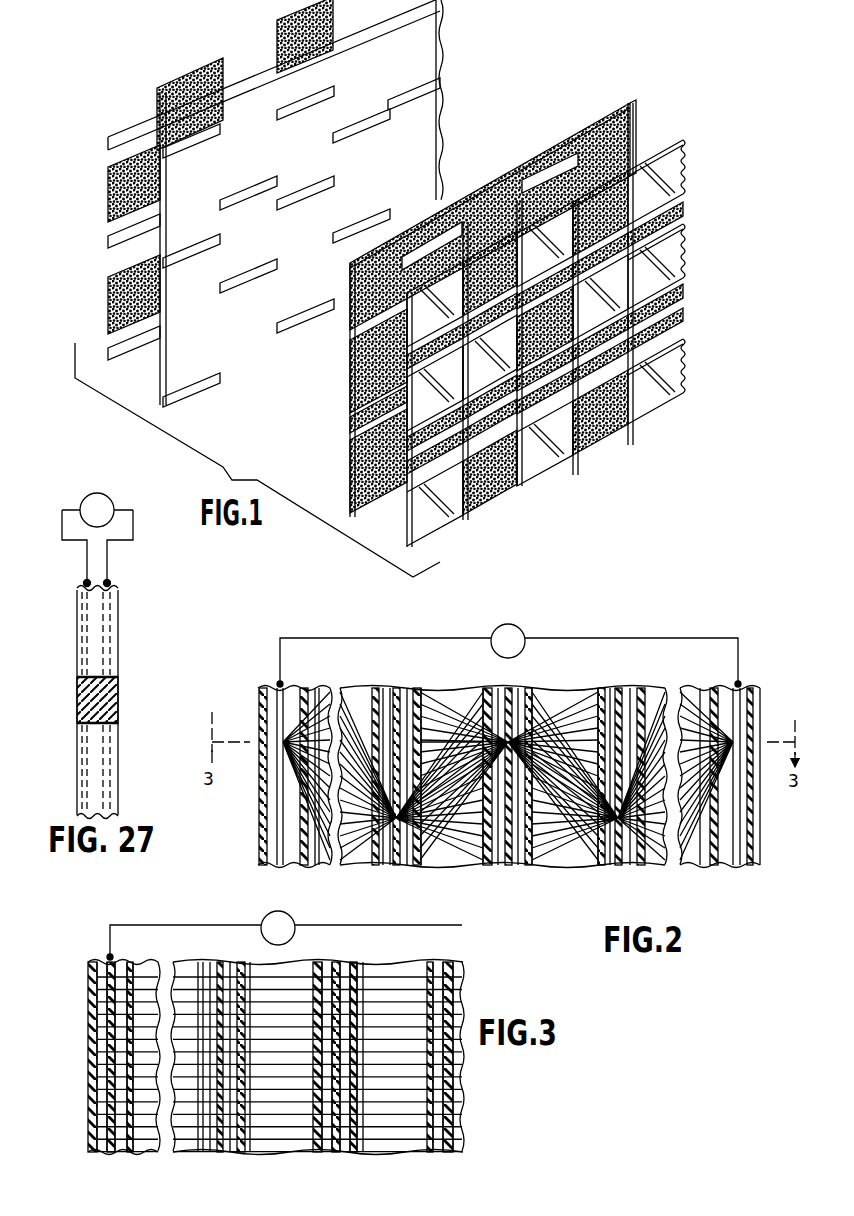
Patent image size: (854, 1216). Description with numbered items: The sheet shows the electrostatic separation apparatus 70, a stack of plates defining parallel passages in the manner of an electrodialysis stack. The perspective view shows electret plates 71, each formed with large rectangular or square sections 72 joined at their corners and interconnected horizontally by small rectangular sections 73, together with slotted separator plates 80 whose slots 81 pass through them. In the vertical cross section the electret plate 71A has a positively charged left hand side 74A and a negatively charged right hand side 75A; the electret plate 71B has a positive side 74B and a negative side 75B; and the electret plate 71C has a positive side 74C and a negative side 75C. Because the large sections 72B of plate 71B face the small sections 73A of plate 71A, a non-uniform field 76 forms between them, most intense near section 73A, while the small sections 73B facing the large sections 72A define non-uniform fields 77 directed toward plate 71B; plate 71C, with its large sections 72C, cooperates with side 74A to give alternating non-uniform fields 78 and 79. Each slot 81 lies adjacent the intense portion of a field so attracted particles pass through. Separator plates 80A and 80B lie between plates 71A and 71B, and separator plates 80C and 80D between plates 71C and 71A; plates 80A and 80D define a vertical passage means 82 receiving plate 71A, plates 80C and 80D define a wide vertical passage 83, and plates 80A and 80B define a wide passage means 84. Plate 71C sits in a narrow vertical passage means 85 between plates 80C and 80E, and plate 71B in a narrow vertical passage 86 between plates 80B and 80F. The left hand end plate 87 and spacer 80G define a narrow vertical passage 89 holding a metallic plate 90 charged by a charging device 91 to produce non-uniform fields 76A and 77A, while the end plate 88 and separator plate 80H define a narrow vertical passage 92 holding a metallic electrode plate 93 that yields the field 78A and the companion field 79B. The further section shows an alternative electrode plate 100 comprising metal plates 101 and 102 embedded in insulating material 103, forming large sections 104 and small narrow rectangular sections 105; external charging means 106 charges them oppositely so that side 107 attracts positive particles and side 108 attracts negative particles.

In FIG. 1, the apparatus 70 is at (633, 40).
In FIG. 2, the apparatus 70 is at (722, 612).
In FIG. 3, the apparatus 70 is at (502, 990).
In FIG. 1, the electret plate 71 is at (153, 100).
In FIG. 1, the large rectangular or square section 72 is at (193, 77).
In FIG. 1, the small rectangular section 73 is at (268, 48).
In FIG. 1, the separator plate 80 is at (440, 63).
In FIG. 1, the slot 81 is at (402, 117).
In FIG. 2, the slot 81 is at (500, 740).
In FIG. 3, the slot 81 is at (317, 983).
In FIG. 2, the electret plate 71A is at (510, 688).
In FIG. 2, the electret plate 71B is at (618, 688).
In FIG. 2, the electret plate 71C is at (397, 688).
In FIG. 2, the large section 72A is at (490, 842).
In FIG. 2, the large section 72B is at (600, 772).
In FIG. 2, the large section 72C is at (373, 853).
In FIG. 2, the small section 73A is at (490, 748).
In FIG. 2, the small section 73B is at (600, 840).
In FIG. 2, the left hand side 74A is at (500, 672).
In FIG. 2, the side 74B is at (618, 672).
In FIG. 2, the side 74C is at (378, 690).
In FIG. 2, the right hand side 75A is at (528, 690).
In FIG. 2, the side 75B is at (640, 690).
In FIG. 2, the side 75C is at (417, 690).
In FIG. 2, the non-uniform field 76 is at (577, 720).
In FIG. 2, the non-uniform field 76A is at (328, 668).
In FIG. 2, the non-uniform field 77 is at (550, 830).
In FIG. 2, the non-uniform field 77A is at (323, 837).
In FIG. 2, the non-uniform field 78 is at (442, 723).
In FIG. 2, the non-uniform field 78A is at (693, 723).
In FIG. 2, the non-uniform field 79 is at (425, 895).
In FIG. 2, the conductor 79B is at (695, 867).
In FIG. 2, the separator plate 80A is at (520, 866).
In FIG. 3, the separator plate 80A is at (360, 1120).
In FIG. 2, the separator plate 80B is at (596, 867).
In FIG. 3, the separator plate 80B is at (440, 962).
In FIG. 2, the separator plate 80C is at (463, 870).
In FIG. 3, the separator plate 80C is at (240, 968).
In FIG. 2, the separator plate 80D is at (480, 870).
In FIG. 3, the separator plate 80D is at (317, 1120).
In FIG. 2, the separator plate 80E is at (397, 870).
In FIG. 2, the separator plate 80F is at (640, 866).
In FIG. 2, the spacer 80G is at (305, 867).
In FIG. 2, the separator plate 80H is at (712, 862).
In FIG. 2, the vertical passage means 82 is at (503, 870).
In FIG. 3, the vertical passage means 82 is at (343, 963).
In FIG. 2, the vertical passage 83 is at (440, 700).
In FIG. 3, the vertical passage 83 is at (288, 967).
In FIG. 2, the passage means 84 is at (568, 688).
In FIG. 3, the passage means 84 is at (398, 965).
In FIG. 2, the vertical passage means 85 is at (405, 870).
In FIG. 3, the vertical passage means 85 is at (212, 960).
In FIG. 2, the vertical passage 86 is at (628, 870).
In FIG. 2, the end plate 87 is at (262, 690).
In FIG. 2, the end plate 88 is at (757, 690).
In FIG. 2, the vertical passage 89 is at (280, 678).
In FIG. 2, the metallic plate 90 is at (280, 813).
In FIG. 3, the metallic plate 90 is at (92, 1083).
In FIG. 2, the charging device 91 is at (495, 628).
In FIG. 3, the charging device 91 is at (263, 922).
In FIG. 2, the vertical passage 92 is at (742, 680).
In FIG. 2, the metallic electrode plate 93 is at (740, 818).
In FIG. 27, the electrode plate 100 is at (130, 615).
In FIG. 27, the metal plate 101 is at (80, 630).
In FIG. 27, the metal plate 102 is at (112, 648).
In FIG. 27, the insulating material 103 is at (112, 687).
In FIG. 27, the large rectangular or square section 104 is at (118, 762).
In FIG. 27, the small narrow rectangular section 105 is at (78, 693).
In FIG. 27, the external charging means 106 is at (88, 493).
In FIG. 27, the side 107 is at (78, 755).
In FIG. 27, the side 108 is at (118, 723).